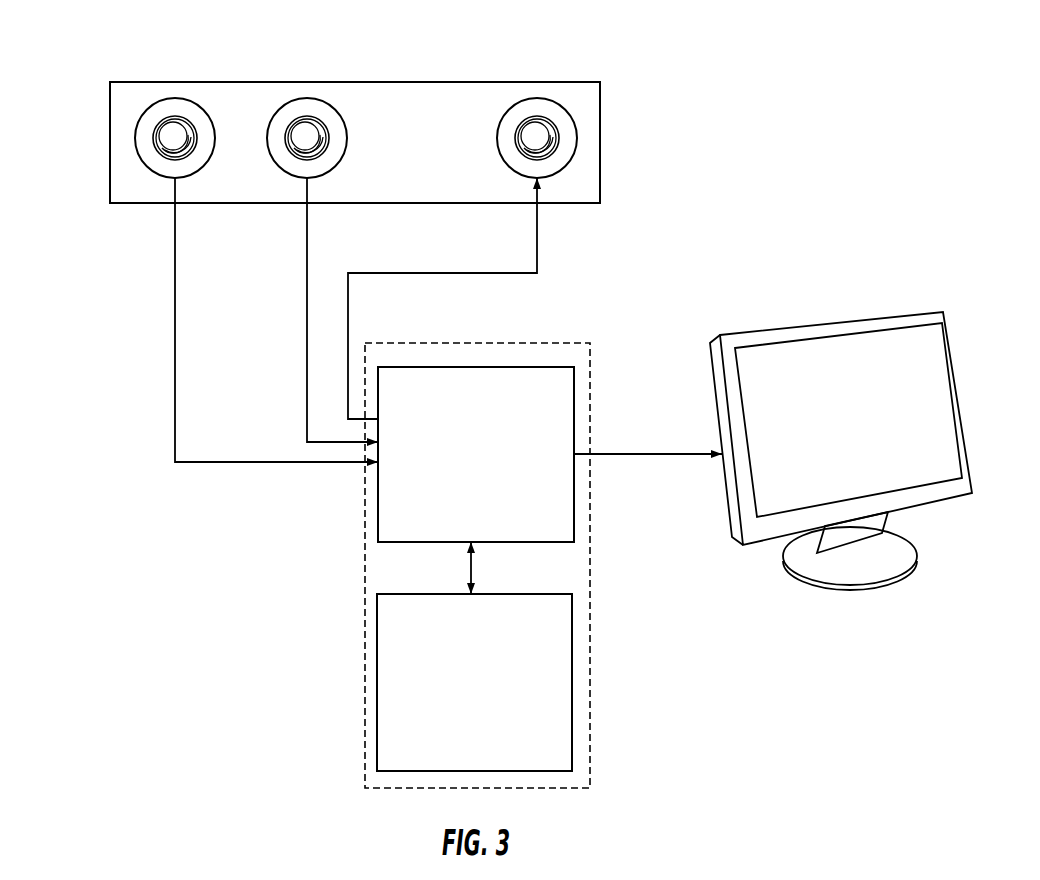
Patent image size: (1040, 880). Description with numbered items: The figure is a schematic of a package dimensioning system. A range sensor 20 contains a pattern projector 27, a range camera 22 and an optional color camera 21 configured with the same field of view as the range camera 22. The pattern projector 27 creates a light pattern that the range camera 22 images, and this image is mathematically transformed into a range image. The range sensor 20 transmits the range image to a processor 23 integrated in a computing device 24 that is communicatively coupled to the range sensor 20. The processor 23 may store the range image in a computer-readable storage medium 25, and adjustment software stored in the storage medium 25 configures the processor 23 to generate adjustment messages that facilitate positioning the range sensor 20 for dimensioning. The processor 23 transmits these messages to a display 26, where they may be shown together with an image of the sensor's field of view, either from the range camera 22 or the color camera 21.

The range sensor 20 is at (110, 138).
The color camera 21 is at (163, 100).
The range camera 22 is at (292, 100).
The pattern projector 27 is at (523, 100).
The computing device 24 is at (577, 342).
The processor 23 is at (574, 512).
The computer-readable storage medium 25 is at (574, 680).
The display 26 is at (947, 308).